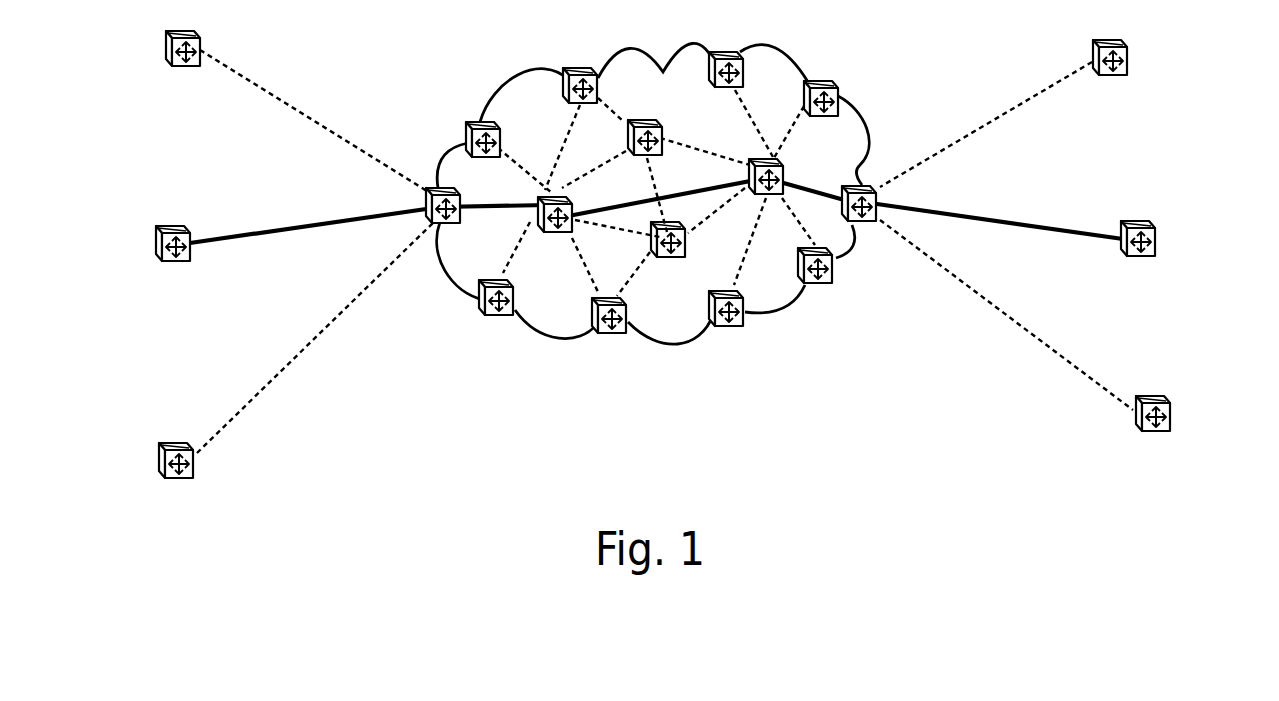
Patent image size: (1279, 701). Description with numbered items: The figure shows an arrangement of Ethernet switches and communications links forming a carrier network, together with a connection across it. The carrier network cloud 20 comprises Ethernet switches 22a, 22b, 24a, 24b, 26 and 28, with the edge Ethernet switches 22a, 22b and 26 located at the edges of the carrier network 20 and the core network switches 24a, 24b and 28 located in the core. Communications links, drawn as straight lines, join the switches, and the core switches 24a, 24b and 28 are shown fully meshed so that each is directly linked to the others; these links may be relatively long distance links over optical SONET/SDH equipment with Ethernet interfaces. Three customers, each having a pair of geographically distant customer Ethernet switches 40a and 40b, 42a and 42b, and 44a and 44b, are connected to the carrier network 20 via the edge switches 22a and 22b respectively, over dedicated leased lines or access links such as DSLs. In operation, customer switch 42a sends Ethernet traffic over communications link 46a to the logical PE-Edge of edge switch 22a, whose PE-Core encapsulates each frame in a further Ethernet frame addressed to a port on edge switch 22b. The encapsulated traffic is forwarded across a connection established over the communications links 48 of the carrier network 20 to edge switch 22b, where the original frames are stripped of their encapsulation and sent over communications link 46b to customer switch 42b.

The carrier network cloud 20 is at (662, 350).
The edge Ethernet switch 22a is at (437, 182).
The edge Ethernet switch 22b is at (870, 180).
The core network Ethernet switch 24a is at (557, 233).
The core network Ethernet switch 24b is at (752, 160).
The edge Ethernet switch 26 is at (476, 122).
The core network Ethernet switch 28 is at (643, 123).
The customer Ethernet switch 40a is at (165, 53).
The customer Ethernet switch 40b is at (1130, 64).
The customer Ethernet switch 42a is at (158, 243).
The customer Ethernet switch 42b is at (1158, 247).
The customer Ethernet switch 44a is at (162, 457).
The customer Ethernet switch 44b is at (1175, 427).
The communications link 46a is at (242, 238).
The communications link 46b is at (1021, 226).
The communications links 48 is at (495, 208).